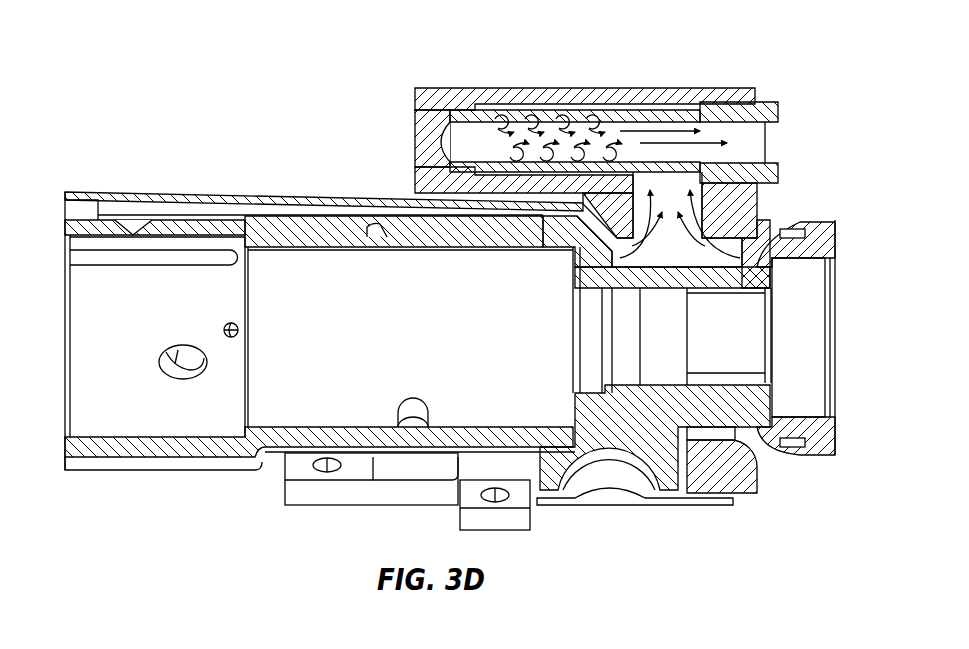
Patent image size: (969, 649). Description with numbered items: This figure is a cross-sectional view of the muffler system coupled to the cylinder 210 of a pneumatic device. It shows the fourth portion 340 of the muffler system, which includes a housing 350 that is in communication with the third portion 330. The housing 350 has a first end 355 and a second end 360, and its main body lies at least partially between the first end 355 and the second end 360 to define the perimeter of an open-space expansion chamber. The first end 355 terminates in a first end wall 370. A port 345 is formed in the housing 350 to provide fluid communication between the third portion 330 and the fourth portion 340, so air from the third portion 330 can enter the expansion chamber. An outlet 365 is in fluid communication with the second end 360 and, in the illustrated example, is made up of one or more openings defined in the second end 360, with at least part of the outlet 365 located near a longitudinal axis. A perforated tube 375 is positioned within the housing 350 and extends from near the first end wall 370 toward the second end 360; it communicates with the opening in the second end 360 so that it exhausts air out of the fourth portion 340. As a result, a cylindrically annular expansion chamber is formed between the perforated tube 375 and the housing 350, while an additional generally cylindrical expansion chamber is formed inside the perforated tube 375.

The cylinder 210 is at (469, 319).
The third portion 330 is at (768, 202).
The fourth portion 340 is at (575, 103).
The port 345 is at (585, 182).
The housing 350 is at (480, 88).
The first end 355 is at (396, 135).
The second end 360 is at (784, 116).
The outlet 365 is at (750, 137).
The first end wall 370 is at (417, 183).
The perforated tube 375 is at (683, 112).